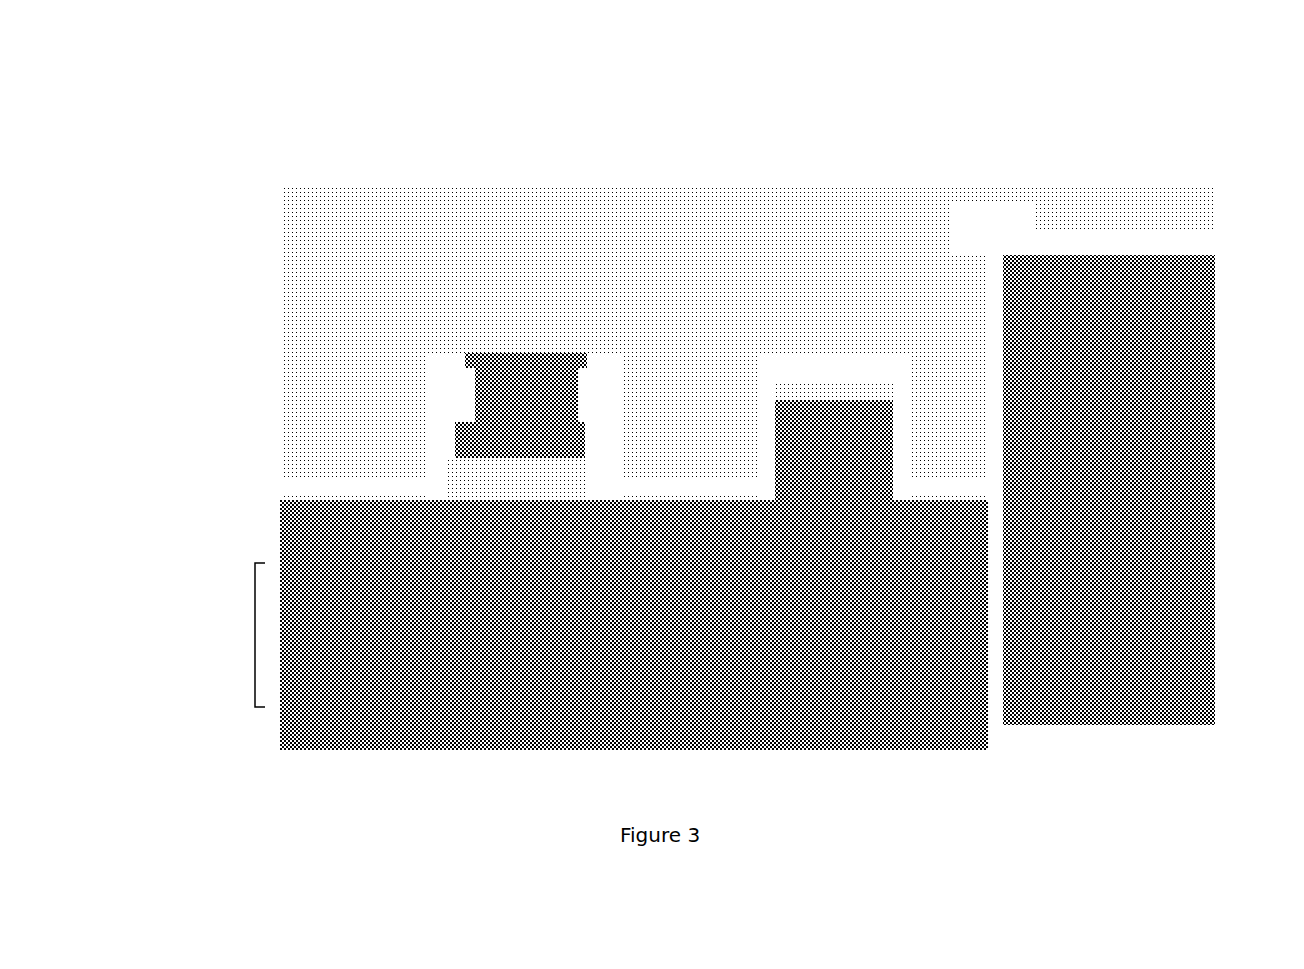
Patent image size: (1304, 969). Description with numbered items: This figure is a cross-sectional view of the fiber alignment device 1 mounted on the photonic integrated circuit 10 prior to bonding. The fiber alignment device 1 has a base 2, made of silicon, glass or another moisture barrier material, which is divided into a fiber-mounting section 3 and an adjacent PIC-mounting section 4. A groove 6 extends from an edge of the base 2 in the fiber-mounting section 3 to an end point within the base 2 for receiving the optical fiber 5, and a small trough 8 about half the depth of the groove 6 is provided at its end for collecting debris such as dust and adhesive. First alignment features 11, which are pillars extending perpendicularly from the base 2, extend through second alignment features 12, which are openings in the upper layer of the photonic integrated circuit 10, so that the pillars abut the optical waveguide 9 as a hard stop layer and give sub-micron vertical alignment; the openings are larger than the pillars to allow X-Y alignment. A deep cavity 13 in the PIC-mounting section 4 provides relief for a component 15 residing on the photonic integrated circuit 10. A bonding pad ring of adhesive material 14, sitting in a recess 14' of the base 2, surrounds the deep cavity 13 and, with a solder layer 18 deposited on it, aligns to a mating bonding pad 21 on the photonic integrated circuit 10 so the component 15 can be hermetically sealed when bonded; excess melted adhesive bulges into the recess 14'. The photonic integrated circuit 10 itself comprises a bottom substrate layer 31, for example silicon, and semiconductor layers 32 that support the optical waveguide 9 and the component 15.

The fiber alignment device 1 is at (452, 140).
The base 2 is at (401, 268).
The fiber-mounting section 3 is at (1197, 187).
The PIC-mounting section 4 is at (280, 237).
The optical fiber 5 is at (1208, 308).
The groove 6 is at (1152, 242).
The trough 8 is at (958, 223).
The optical waveguide 9 is at (280, 497).
The photonic integrated circuit 10 is at (218, 607).
The first alignment features 11 is at (359, 441).
The second alignment features 12 is at (612, 487).
The deep cavity 13 is at (842, 358).
The bonding pad ring of adhesive material 14 is at (526, 264).
The recess 14' is at (395, 289).
The component 15 is at (842, 471).
The solder layer 18 is at (500, 396).
The mating bonding pad 21 is at (465, 438).
The substrate layer 31 is at (485, 738).
The semiconductor layers 32 is at (255, 635).